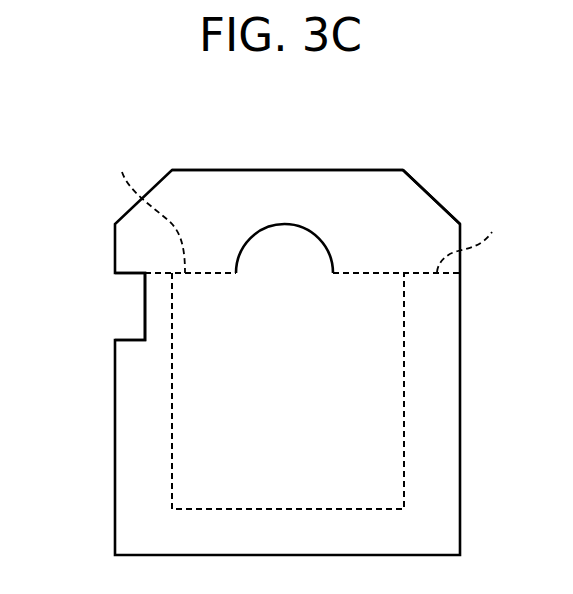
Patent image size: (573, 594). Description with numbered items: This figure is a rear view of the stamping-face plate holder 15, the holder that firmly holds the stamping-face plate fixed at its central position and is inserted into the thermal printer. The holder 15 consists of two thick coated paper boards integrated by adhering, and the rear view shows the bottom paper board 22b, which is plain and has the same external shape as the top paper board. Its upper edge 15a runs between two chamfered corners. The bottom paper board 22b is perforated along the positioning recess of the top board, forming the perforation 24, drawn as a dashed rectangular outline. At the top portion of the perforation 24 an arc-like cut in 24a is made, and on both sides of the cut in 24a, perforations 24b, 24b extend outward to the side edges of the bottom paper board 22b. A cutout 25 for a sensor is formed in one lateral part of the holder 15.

The stamping-face plate holder 15 is at (377, 163).
The top edge of card 15a is at (288, 169).
The bottom paper board 22b is at (417, 200).
The perforation 24 is at (405, 322).
The arc-like cut in 24a is at (320, 237).
The perforations 24b is at (305, 208).
The cutout for a sensor 25 is at (128, 312).